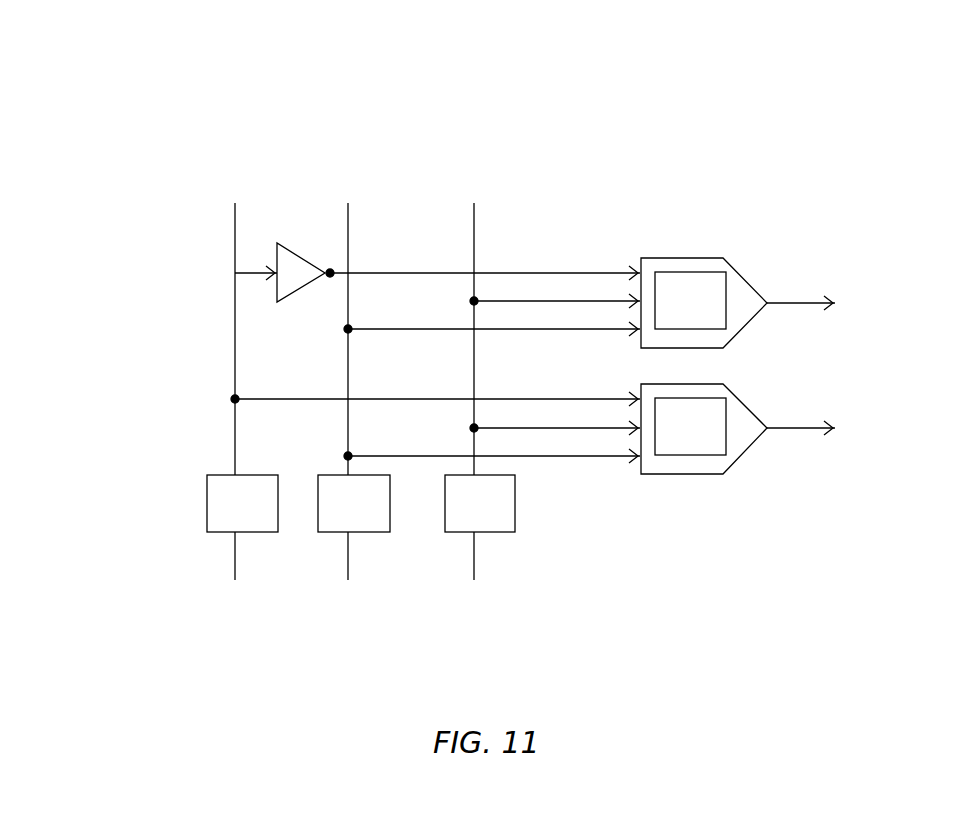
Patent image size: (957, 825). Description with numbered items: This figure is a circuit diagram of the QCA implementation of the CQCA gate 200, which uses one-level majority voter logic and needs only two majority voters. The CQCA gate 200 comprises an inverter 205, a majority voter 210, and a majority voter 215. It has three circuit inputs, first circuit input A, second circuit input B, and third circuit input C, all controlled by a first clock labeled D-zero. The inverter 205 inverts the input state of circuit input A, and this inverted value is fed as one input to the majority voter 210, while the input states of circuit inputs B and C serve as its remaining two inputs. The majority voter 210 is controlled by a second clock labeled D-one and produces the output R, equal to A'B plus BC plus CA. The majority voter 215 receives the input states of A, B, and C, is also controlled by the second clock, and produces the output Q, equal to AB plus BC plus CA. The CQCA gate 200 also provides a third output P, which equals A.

The CQCA gate 200 is at (157, 82).
The inverter 205 is at (301, 255).
The majority voter 210 is at (685, 258).
The majority voter 215 is at (685, 476).